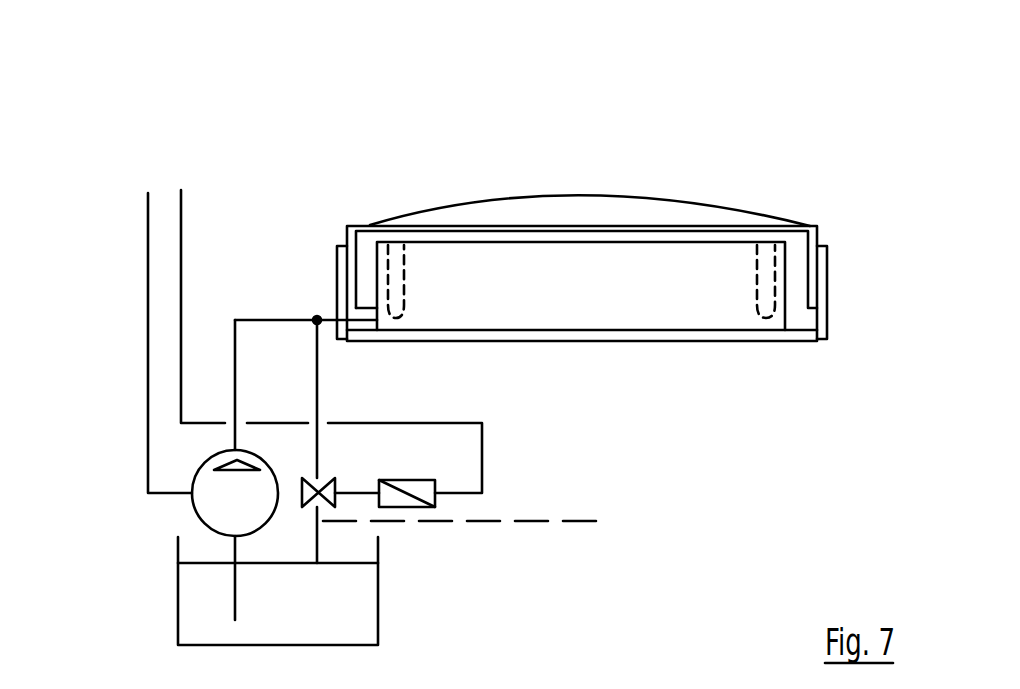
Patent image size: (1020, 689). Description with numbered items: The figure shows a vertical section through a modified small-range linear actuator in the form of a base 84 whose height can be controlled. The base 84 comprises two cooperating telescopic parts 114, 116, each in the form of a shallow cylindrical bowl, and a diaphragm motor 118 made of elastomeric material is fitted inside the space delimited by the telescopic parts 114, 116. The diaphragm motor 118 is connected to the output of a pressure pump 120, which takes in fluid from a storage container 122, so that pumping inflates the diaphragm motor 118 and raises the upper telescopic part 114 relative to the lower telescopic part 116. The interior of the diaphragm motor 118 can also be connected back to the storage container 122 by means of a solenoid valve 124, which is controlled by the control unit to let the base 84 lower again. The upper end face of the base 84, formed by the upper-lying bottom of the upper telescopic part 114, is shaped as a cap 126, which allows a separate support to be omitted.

The base 84 is at (709, 125).
The upper telescopic part 114 is at (810, 228).
The lower telescopic part 116 is at (782, 341).
The diaphragm motor 118 is at (600, 262).
The pressure pump 120 is at (210, 498).
The storage container 122 is at (178, 610).
The solenoid valve 124 is at (343, 478).
The cap 126 is at (481, 204).